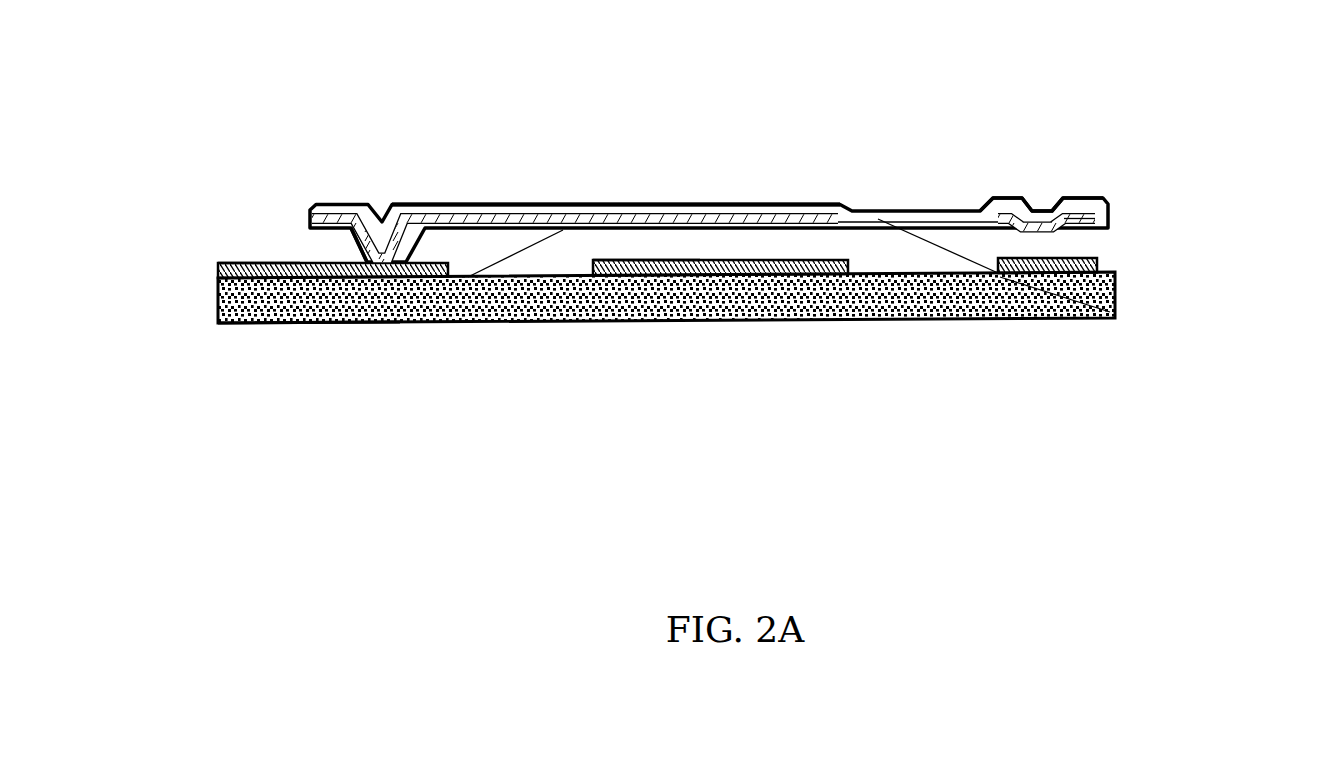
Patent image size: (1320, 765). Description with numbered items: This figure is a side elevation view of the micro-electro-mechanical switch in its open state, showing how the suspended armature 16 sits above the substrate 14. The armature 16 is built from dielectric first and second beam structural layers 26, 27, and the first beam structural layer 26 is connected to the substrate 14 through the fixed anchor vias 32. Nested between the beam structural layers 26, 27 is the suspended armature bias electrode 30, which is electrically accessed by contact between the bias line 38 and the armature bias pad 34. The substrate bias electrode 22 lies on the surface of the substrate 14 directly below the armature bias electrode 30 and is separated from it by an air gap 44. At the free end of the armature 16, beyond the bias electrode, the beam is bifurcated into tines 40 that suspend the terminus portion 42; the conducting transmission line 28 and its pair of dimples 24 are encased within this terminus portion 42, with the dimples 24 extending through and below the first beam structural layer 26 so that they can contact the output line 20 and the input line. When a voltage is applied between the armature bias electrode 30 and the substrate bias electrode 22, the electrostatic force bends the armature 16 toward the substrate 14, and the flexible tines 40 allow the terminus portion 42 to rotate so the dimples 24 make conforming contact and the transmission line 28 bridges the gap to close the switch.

The substrate 14 is at (318, 306).
The armature 16 is at (608, 185).
The output line 20 is at (1117, 310).
The substrate bias electrode 22 is at (730, 280).
The dimples 24 is at (1075, 231).
The first beam structural layer 26 is at (450, 277).
The second beam structural layer 27 is at (583, 202).
The conducting transmission line 28 is at (408, 202).
The armature bias electrode 30 is at (627, 215).
The fixed anchor vias 32 is at (362, 262).
The armature bias pad 34 is at (243, 262).
The bias line 38 is at (510, 202).
The tines 40 is at (1053, 318).
The terminus portion 42 is at (985, 168).
The air gap 44 is at (695, 243).